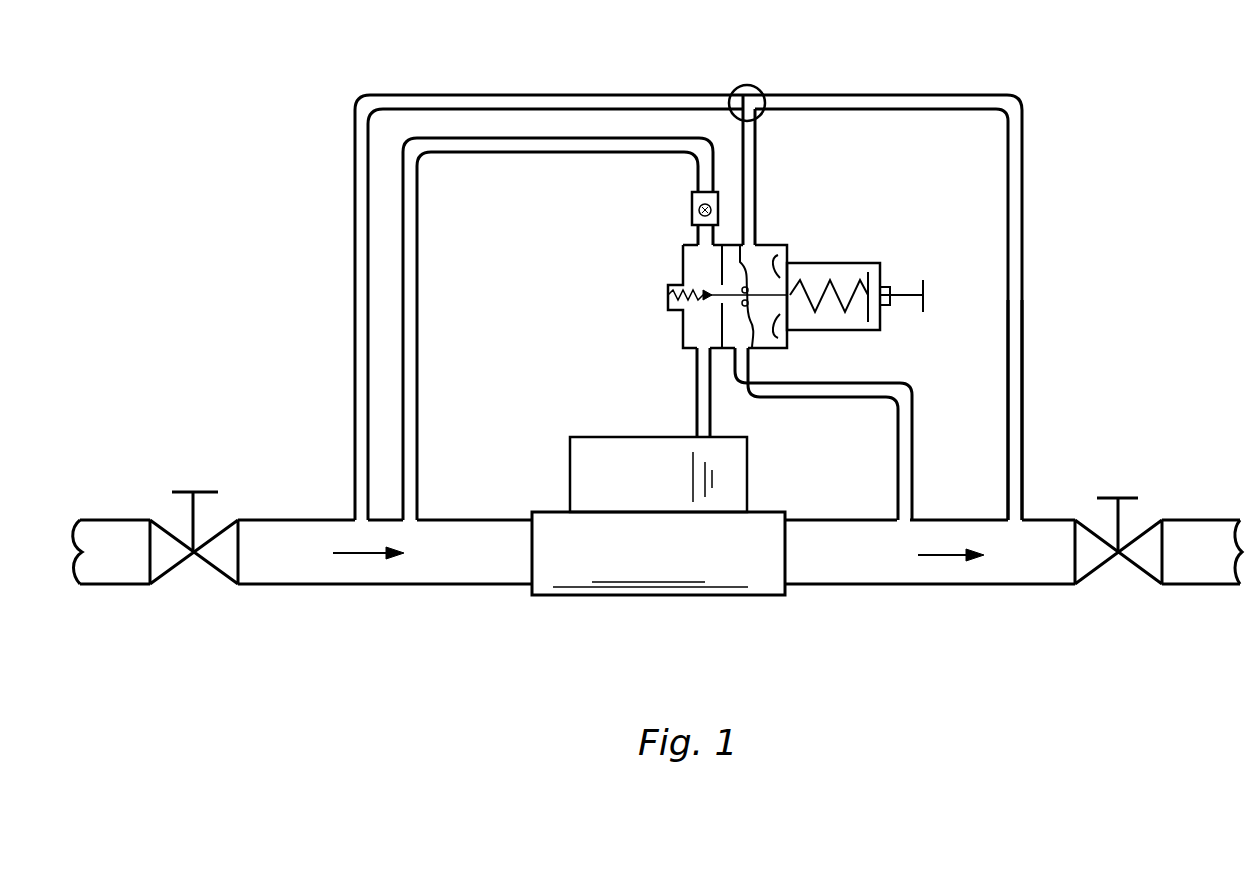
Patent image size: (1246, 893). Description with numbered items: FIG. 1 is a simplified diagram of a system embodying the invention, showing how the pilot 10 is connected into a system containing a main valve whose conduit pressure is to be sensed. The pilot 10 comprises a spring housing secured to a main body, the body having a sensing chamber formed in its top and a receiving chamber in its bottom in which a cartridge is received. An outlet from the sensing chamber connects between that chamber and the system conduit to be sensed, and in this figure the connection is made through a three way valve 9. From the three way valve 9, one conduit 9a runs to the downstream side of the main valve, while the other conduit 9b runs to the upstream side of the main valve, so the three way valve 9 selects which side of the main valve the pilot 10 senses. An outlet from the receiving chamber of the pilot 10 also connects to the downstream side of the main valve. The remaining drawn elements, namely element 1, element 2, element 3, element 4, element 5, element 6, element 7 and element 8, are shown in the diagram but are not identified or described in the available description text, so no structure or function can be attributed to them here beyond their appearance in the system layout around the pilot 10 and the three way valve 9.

The inlet pipe with shut-off valve 1 is at (297, 520).
The flow meter 2 is at (614, 596).
The outlet pipe 3 is at (995, 586).
The outlet shut-off valve 4 is at (1132, 568).
The control line from inlet 5 is at (510, 138).
The throttle / orifice 6 is at (692, 210).
The connecting line to flow meter 7 is at (697, 393).
The line to outlet pipe 8 is at (898, 428).
The three way valve 9 is at (759, 88).
The conduit 9a is at (1022, 281).
The conduit 9b is at (584, 95).
The pilot 10 is at (845, 252).